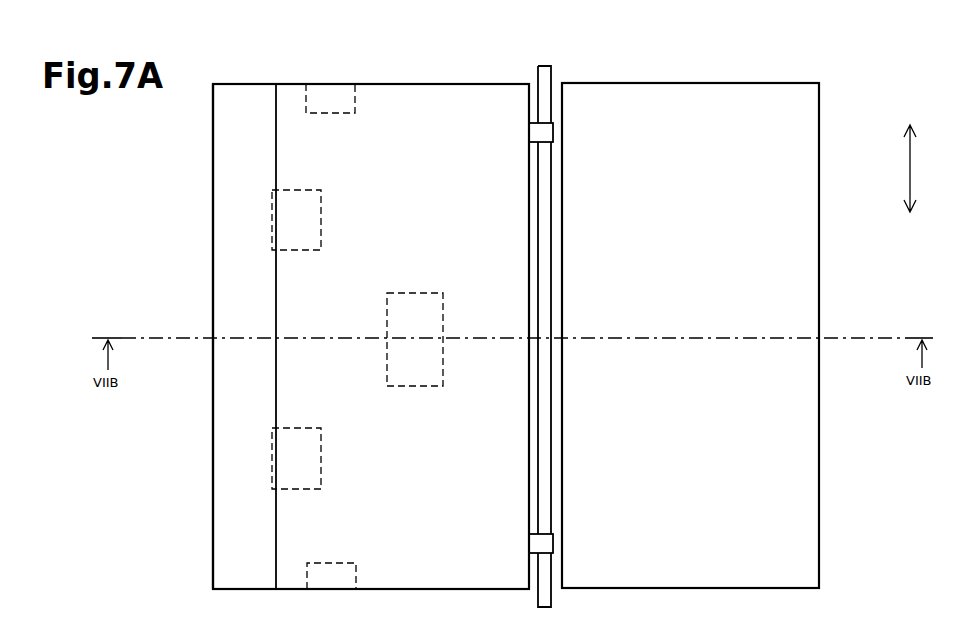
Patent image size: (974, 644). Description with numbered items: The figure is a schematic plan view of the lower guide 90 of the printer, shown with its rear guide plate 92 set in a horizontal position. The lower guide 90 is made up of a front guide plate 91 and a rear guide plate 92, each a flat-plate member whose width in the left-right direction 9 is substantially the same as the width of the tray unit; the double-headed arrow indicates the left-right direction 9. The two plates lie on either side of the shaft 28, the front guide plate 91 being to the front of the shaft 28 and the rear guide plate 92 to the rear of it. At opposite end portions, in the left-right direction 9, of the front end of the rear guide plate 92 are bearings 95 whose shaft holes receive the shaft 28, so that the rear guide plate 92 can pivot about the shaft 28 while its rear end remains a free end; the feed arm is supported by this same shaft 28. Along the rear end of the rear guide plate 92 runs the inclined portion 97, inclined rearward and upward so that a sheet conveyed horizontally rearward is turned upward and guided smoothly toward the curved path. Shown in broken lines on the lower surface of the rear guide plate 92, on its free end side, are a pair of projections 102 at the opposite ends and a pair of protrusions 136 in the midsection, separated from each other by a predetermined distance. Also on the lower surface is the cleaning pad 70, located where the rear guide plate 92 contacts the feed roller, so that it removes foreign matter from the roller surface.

The lower guide 90 is at (208, 611).
The front guide plate 91 is at (819, 440).
The rear guide plate 92 is at (213, 133).
The bearings 95 is at (553, 132).
The inclined portion 97 is at (222, 446).
The projections 102 is at (352, 115).
The protrusions 136 is at (307, 188).
The cleaning pad 70 is at (425, 387).
The shaft 28 is at (543, 610).
The left-right direction 9 is at (910, 155).